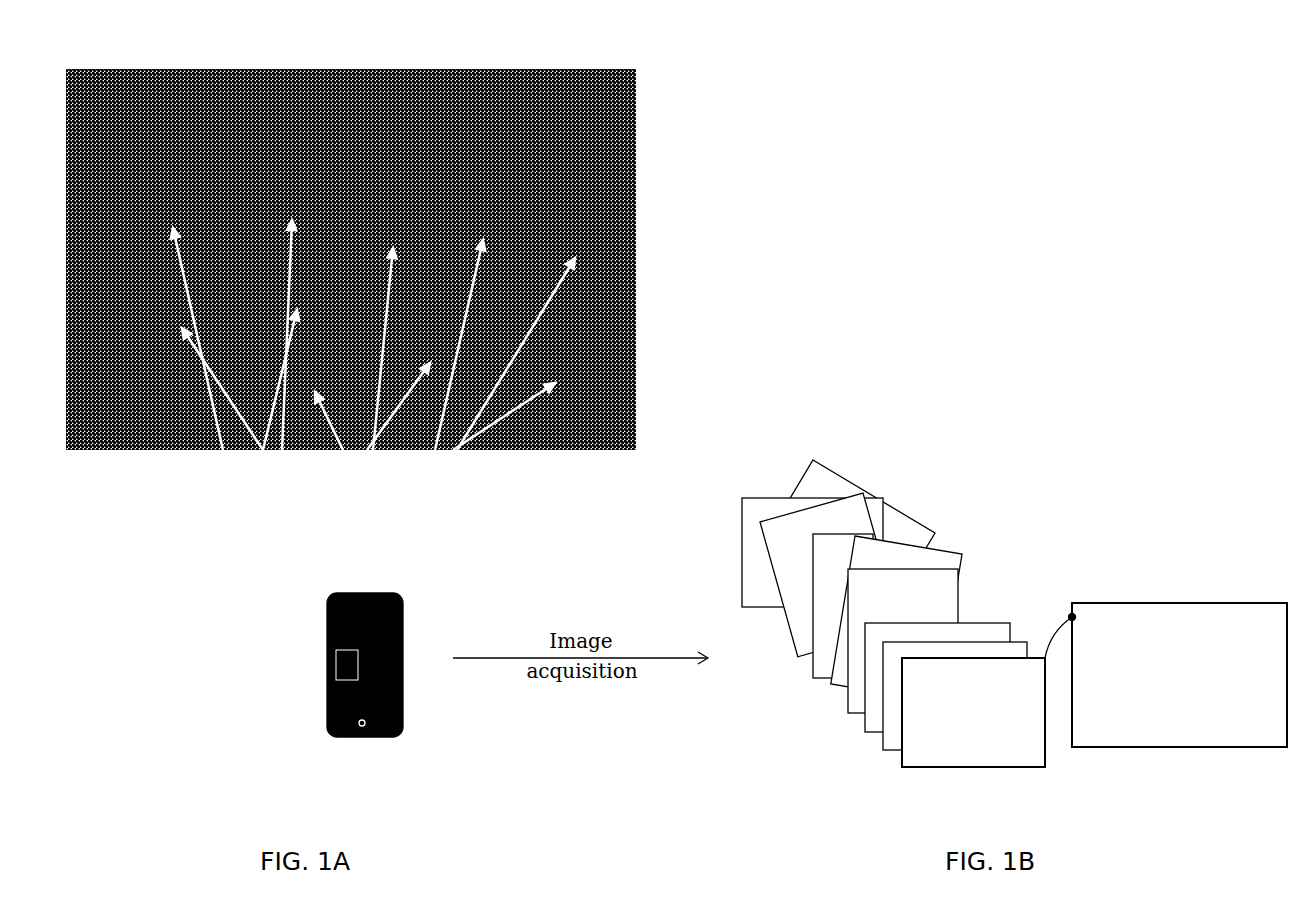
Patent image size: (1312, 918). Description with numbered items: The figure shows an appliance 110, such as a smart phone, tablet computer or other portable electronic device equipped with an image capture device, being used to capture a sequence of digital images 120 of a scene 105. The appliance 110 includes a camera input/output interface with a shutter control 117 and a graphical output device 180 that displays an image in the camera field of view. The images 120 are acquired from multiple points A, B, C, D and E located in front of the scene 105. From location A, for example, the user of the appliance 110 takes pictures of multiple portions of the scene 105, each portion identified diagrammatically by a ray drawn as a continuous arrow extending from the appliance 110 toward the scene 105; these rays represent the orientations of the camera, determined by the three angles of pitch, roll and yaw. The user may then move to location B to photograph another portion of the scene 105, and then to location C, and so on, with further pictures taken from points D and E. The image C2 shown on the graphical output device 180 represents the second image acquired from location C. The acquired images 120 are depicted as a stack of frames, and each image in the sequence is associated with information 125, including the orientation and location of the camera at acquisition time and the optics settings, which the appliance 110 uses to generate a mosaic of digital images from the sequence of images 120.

In FIG. 1A, the scene 105 is at (457, 50).
In FIG. 1A, the appliance 110 is at (364, 690).
In FIG. 1A, the shutter control 117 is at (362, 738).
In FIG. 1A, the graphical output device 180 is at (332, 692).
In FIG. 1A, the image C2 is at (340, 675).
In FIG. 1A, the point A is at (283, 450).
In FIG. 1A, the point B is at (262, 450).
In FIG. 1A, the point C is at (373, 450).
In FIG. 1A, the point D is at (457, 450).
In FIG. 1A, the point E is at (453, 450).
In FIG. 1B, the digital images 120 is at (972, 496).
In FIG. 1B, the information 125 is at (1205, 603).